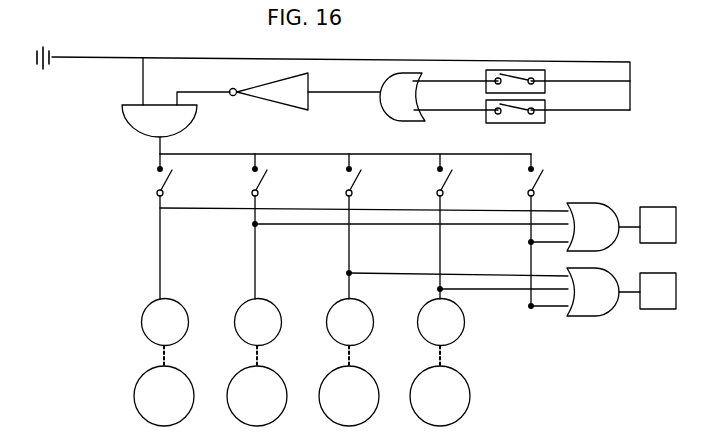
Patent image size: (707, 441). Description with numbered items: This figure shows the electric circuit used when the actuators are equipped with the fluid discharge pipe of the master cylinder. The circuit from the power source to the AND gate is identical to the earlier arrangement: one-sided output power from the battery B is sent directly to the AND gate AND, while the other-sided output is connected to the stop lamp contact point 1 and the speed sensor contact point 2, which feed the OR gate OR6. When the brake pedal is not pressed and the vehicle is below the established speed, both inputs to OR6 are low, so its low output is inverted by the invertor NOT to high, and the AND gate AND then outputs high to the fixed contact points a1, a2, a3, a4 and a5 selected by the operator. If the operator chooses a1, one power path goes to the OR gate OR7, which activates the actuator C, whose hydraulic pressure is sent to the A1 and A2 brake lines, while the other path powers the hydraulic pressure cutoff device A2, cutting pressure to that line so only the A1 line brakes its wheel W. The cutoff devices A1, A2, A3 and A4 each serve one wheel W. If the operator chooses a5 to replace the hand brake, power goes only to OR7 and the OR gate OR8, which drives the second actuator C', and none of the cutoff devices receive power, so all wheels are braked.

The stop lamp contact point 1 is at (524, 70).
The speed sensor contact point 2 is at (519, 123).
The battery B is at (36, 56).
The AND gate AND is at (159, 121).
The invertor NOT is at (269, 91).
The OR gate OR6 is at (402, 97).
The OR gate OR7 is at (593, 227).
The OR gate OR8 is at (593, 292).
The fixed contact point a1 is at (171, 176).
The fixed contact point a2 is at (266, 176).
The fixed contact point a3 is at (360, 176).
The fixed contact point a4 is at (451, 176).
The fixed contact point a5 is at (542, 176).
The hydraulic pressure cutoff device A1 is at (258, 322).
The hydraulic pressure cutoff device A2 is at (165, 322).
The hydraulic pressure cutoff device A3 is at (441, 322).
The hydraulic pressure cutoff device A4 is at (350, 322).
The actuator C is at (658, 225).
The actuator C' is at (658, 291).
The wheel W is at (302, 396).